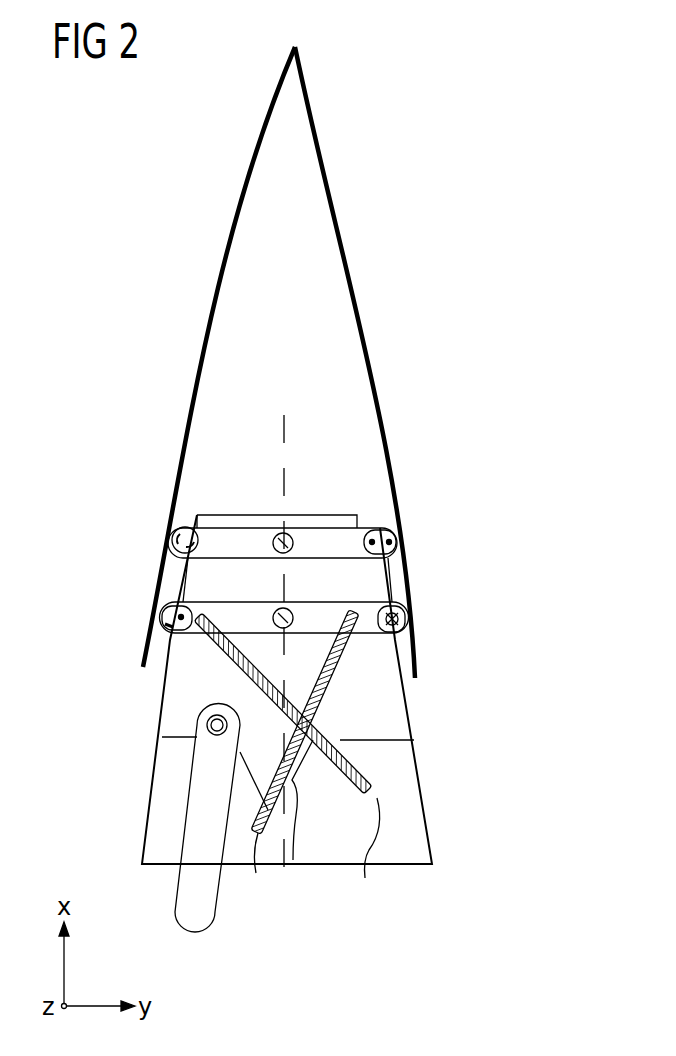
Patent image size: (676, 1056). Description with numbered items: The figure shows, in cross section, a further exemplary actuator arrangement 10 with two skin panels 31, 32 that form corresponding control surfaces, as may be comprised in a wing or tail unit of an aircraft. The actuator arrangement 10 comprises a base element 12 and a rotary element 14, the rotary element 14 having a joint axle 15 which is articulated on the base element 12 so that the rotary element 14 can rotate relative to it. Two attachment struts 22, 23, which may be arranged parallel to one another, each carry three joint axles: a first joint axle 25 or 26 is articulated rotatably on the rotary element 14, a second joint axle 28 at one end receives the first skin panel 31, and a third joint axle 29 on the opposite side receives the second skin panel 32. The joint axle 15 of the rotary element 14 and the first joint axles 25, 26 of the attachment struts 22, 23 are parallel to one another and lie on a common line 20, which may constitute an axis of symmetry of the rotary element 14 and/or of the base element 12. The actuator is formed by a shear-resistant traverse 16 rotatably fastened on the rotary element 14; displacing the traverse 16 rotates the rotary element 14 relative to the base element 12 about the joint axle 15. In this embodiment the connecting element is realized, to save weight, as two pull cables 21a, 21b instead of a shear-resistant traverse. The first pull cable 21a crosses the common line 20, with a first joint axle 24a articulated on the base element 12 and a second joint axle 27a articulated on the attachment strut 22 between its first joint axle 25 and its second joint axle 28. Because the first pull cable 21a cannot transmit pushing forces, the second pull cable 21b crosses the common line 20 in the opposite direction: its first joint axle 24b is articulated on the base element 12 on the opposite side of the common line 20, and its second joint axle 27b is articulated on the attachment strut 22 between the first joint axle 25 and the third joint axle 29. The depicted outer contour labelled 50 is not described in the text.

The actuator arrangement 10 is at (487, 637).
The base element 12 is at (414, 818).
The rotary element 14 is at (356, 713).
The joint axle 15 is at (296, 664).
The shear-resistant traverse 16 is at (176, 907).
The common line 20 is at (285, 485).
The first pull cable 21a is at (357, 770).
The second pull cable 21b is at (338, 689).
The attachment strut 22 is at (333, 614).
The attachment strut 23 is at (372, 512).
The first joint axle 24a is at (370, 858).
The first joint axle 24b is at (296, 758).
The first joint axle 25 is at (273, 618).
The first joint axle 26 is at (281, 533).
The second joint axle 27a is at (188, 600).
The second joint axle 27b is at (416, 654).
The second joint axle 28 is at (172, 542).
The third joint axle 29 is at (398, 541).
The first skin panel 31 is at (230, 232).
The second skin panel 32 is at (347, 222).
The nose cone 50 is at (295, 362).